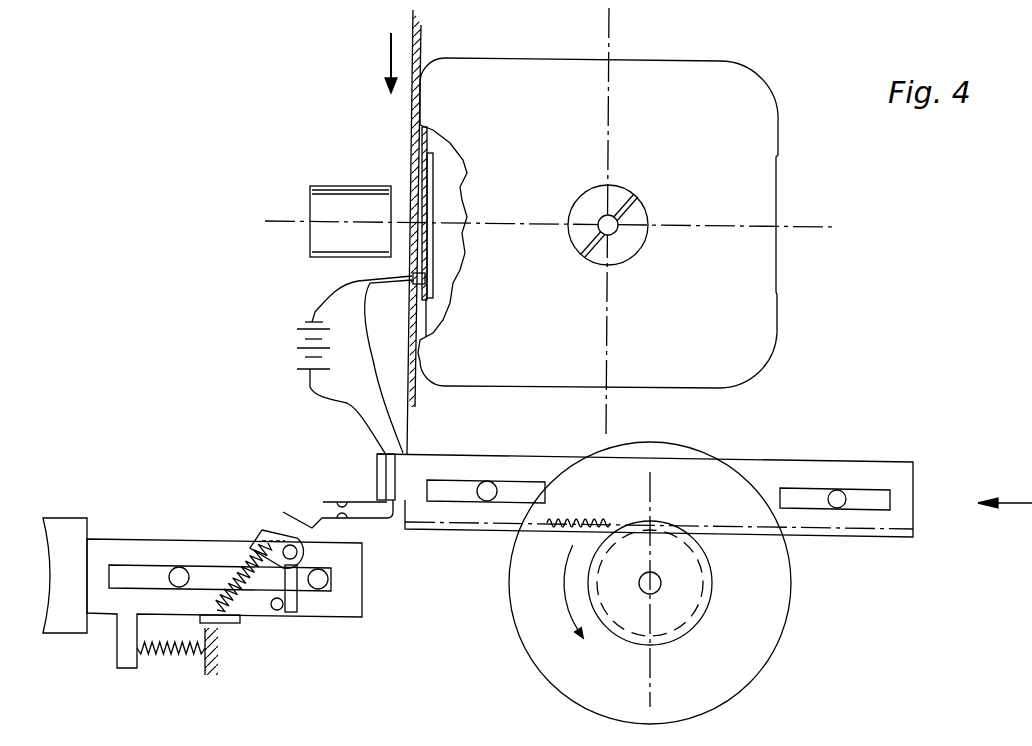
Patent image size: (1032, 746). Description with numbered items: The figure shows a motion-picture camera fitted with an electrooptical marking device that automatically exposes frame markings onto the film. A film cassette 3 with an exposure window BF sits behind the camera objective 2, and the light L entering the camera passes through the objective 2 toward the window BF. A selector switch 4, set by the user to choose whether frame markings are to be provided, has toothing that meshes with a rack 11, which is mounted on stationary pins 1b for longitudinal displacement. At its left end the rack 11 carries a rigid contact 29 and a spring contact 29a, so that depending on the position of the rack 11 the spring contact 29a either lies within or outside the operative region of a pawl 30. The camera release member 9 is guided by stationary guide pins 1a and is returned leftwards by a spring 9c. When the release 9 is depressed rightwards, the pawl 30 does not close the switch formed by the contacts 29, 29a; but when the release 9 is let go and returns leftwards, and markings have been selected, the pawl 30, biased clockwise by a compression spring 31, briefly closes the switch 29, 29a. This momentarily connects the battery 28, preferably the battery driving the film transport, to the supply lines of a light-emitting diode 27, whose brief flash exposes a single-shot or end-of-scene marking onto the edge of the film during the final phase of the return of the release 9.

The stationary guide pins 1a is at (183, 587).
The stationary pins 1b is at (488, 481).
The camera objective 2 is at (325, 205).
The film cassette 3 is at (738, 87).
The selector switch 4 is at (776, 602).
The camera release member 9 is at (127, 550).
The return spring 9c is at (163, 651).
The rack 11 is at (547, 470).
The light-emitting diode 27 is at (345, 285).
The battery 28 is at (312, 320).
The rigid contact 29 is at (349, 500).
The spring contact 29a is at (295, 511).
The pawl 30 is at (264, 530).
The compression spring 31 is at (240, 572).
The exposure window BF is at (415, 212).
The light direction L is at (387, 58).